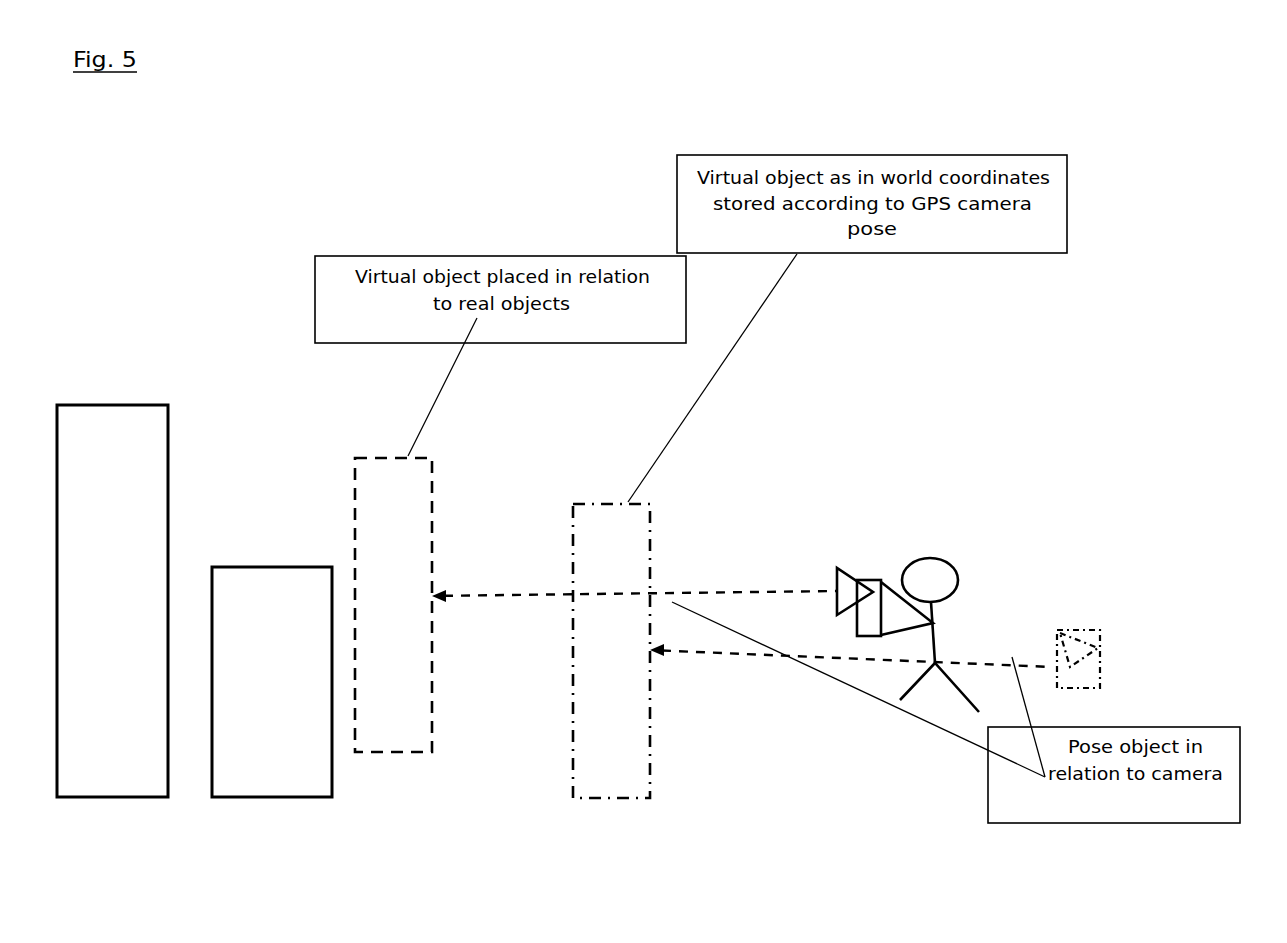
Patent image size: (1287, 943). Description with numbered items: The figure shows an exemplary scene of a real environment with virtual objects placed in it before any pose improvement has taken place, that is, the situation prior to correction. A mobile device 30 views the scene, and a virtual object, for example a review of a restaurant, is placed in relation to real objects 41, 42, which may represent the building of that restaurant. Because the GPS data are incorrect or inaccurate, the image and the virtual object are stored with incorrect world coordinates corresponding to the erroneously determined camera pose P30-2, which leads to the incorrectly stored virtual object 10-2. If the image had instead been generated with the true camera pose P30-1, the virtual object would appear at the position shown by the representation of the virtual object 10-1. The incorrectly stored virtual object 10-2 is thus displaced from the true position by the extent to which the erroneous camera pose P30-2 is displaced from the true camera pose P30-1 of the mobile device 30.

The real object 41 is at (101, 400).
The real object 42 is at (250, 567).
The virtual object at true position 10-1 is at (363, 456).
The incorrectly stored virtual object 10-2 is at (585, 493).
The mobile device 30 is at (870, 568).
The true camera pose P30-1 is at (827, 560).
The erroneous camera pose P30-2 is at (1089, 617).